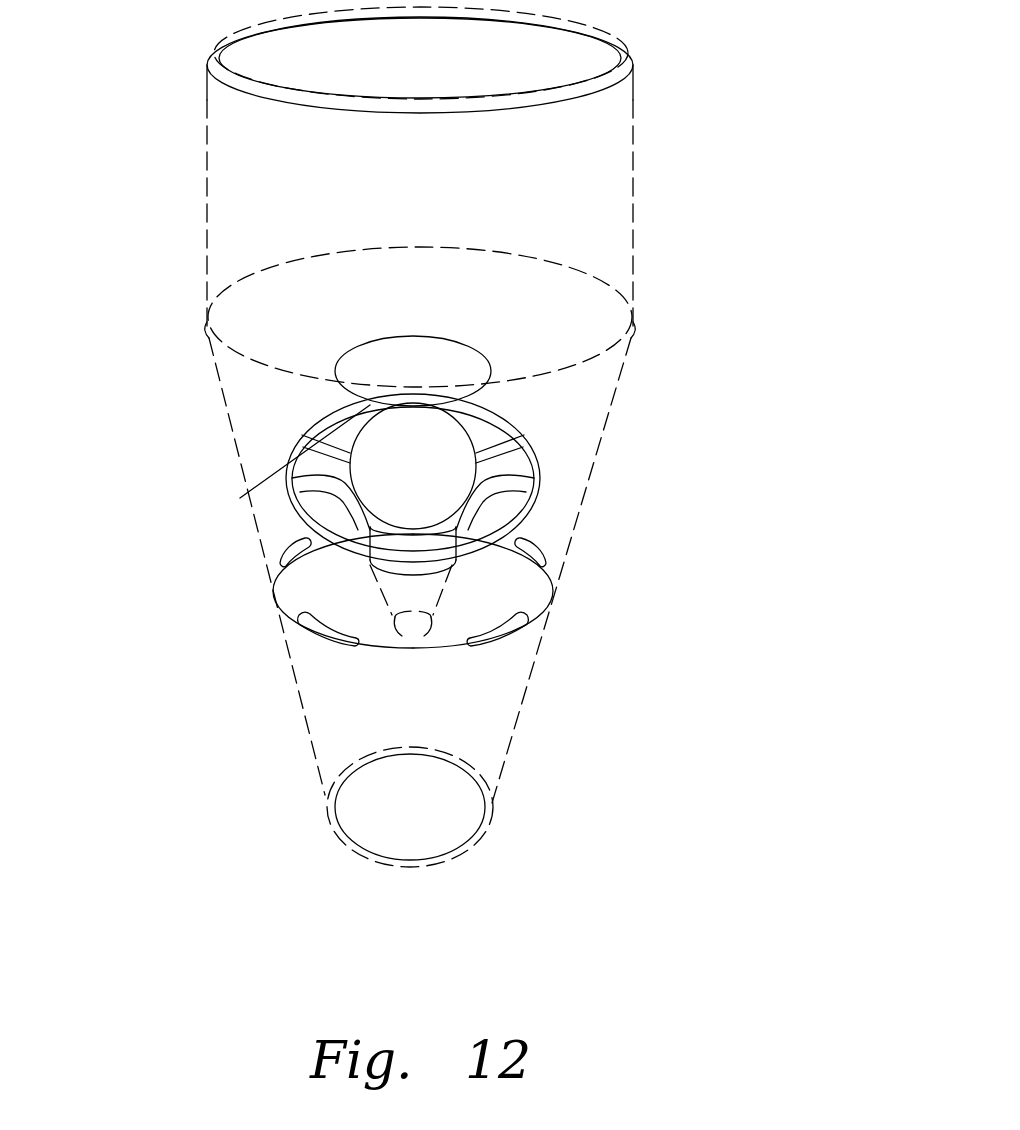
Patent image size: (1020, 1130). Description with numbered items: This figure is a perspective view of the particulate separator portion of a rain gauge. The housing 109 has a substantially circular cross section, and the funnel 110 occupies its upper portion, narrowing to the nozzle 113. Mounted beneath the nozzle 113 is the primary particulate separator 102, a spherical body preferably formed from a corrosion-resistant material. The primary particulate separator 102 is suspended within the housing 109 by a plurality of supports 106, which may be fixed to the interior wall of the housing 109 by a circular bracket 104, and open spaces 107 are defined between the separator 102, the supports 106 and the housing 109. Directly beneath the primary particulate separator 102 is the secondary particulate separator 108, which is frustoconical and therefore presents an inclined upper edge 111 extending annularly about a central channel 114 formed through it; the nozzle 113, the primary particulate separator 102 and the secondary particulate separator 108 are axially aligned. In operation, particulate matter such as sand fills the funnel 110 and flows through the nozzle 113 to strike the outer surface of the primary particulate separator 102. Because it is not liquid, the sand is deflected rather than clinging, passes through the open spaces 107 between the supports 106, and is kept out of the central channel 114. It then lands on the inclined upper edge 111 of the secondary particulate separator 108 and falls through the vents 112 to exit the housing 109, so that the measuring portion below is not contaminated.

The primary particulate separator 102 is at (463, 467).
The circular bracket 104 is at (532, 505).
The supports 106 is at (292, 478).
The open spaces 107 is at (343, 447).
The secondary particulate separator 108 is at (525, 598).
The housing 109 is at (632, 157).
The funnel 110 is at (563, 335).
The inclined upper edge 111 is at (327, 592).
The vents 112 is at (553, 565).
The nozzle 113 is at (427, 368).
The central channel 114 is at (413, 625).